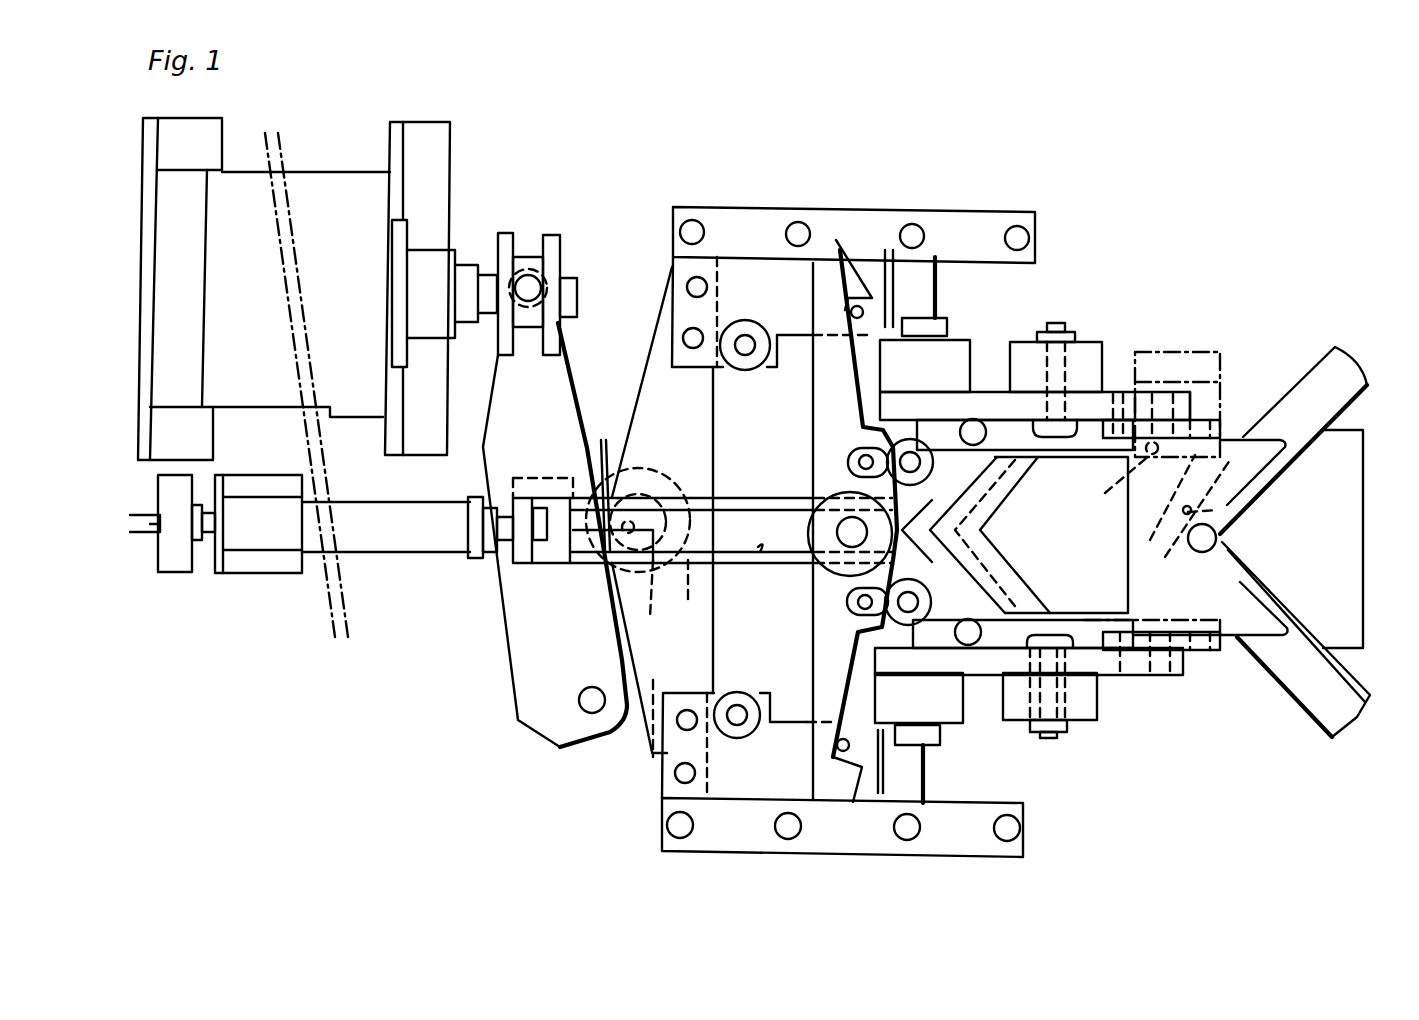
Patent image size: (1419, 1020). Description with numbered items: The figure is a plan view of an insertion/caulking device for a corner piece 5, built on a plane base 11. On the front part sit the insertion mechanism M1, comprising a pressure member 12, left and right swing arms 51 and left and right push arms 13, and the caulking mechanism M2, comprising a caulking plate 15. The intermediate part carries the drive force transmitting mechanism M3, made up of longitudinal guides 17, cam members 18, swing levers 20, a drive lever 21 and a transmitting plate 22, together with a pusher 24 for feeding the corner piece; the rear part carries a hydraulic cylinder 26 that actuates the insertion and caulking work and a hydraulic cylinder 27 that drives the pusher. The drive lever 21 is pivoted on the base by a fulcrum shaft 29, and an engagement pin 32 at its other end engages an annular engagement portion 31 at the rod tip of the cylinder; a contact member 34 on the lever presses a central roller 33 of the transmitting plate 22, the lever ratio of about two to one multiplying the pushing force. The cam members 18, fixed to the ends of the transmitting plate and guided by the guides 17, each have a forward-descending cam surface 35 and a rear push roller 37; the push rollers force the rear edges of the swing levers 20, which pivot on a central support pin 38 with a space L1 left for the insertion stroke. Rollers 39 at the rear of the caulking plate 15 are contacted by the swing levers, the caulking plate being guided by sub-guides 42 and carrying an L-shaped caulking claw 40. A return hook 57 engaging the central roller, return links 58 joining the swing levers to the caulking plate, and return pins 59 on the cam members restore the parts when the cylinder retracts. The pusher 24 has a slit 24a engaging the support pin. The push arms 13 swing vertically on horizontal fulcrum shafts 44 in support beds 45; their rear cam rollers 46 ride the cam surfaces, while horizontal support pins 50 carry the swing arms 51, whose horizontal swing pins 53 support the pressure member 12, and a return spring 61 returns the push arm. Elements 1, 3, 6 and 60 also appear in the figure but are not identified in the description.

The frame body 1 is at (1277, 595).
The lower guide 3 is at (1325, 720).
The corner piece 5 is at (1013, 490).
The lower guide rail 6 is at (1293, 700).
The base 11 is at (525, 832).
The pressure member 12 is at (1257, 628).
The push arms 13 is at (988, 397).
The caulking plate 15 is at (1092, 460).
The guides 17 is at (718, 215).
The cam members 18 is at (756, 262).
The swing levers 20 is at (817, 436).
The drive lever 21 is at (510, 623).
The transmitting plate 22 is at (650, 375).
The pusher 24 is at (663, 560).
The slit 24a is at (758, 547).
The hydraulic cylinder 26 is at (314, 188).
The hydraulic cylinder 27 is at (397, 538).
The fulcrum shaft 29 is at (587, 703).
The annular engagement portion 31 is at (517, 236).
The engagement pin 32 is at (532, 272).
The central roller 33 is at (667, 482).
The contact member 34 is at (602, 448).
The cam surface 35 is at (893, 262).
The push rollers 37 is at (747, 365).
The support pin 38 is at (837, 532).
The rollers 39 is at (893, 447).
The caulking claw 40 is at (1235, 520).
The sub-guides 42 is at (947, 430).
The horizontal fulcrum shafts 44 is at (1028, 385).
The support beds 45 is at (1090, 353).
The cam rollers 46 is at (943, 322).
The horizontal support pins 50 is at (1152, 398).
The swing arms 51 is at (1222, 437).
The horizontal swing pins 53 is at (1220, 347).
The return hook 57 is at (662, 565).
The return links 58 is at (940, 587).
The return pins 59 is at (855, 297).
The clamp body 60 is at (1190, 358).
The return spring 61 is at (1113, 465).
The insertion stroke space L1 is at (804, 742).
The insertion mechanism M1 is at (1236, 398).
The caulking mechanism M2 is at (1088, 642).
The drive force transmitting mechanism M3 is at (645, 252).